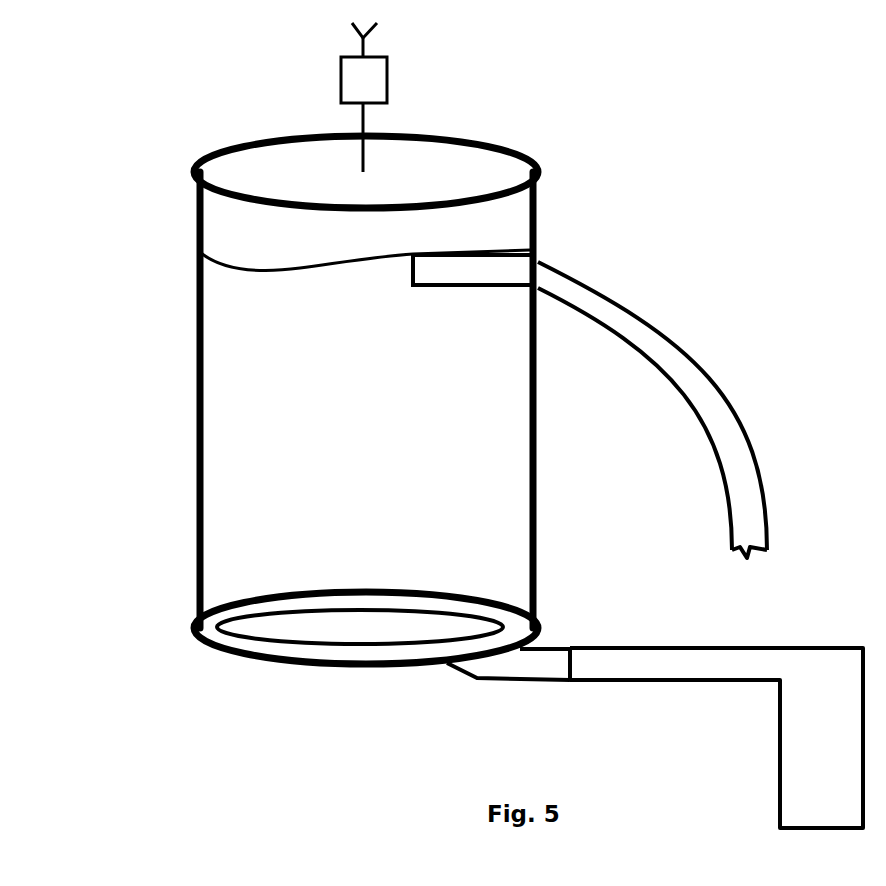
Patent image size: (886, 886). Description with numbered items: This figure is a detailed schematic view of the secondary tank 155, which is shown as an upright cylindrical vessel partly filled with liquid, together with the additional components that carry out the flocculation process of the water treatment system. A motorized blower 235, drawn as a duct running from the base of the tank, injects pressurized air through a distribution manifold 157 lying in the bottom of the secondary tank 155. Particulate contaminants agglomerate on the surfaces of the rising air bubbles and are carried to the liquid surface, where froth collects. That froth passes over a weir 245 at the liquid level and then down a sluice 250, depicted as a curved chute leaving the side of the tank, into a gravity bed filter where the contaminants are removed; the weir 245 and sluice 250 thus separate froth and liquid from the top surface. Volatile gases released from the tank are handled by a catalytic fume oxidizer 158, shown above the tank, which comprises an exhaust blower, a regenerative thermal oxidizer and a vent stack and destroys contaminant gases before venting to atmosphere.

The secondary tank 155 is at (133, 250).
The distribution manifold 157 is at (290, 632).
The catalytic fume oxidizer 158 is at (364, 97).
The weir 245 is at (438, 295).
The sluice 250 is at (695, 427).
The motorized blower 235 is at (838, 772).